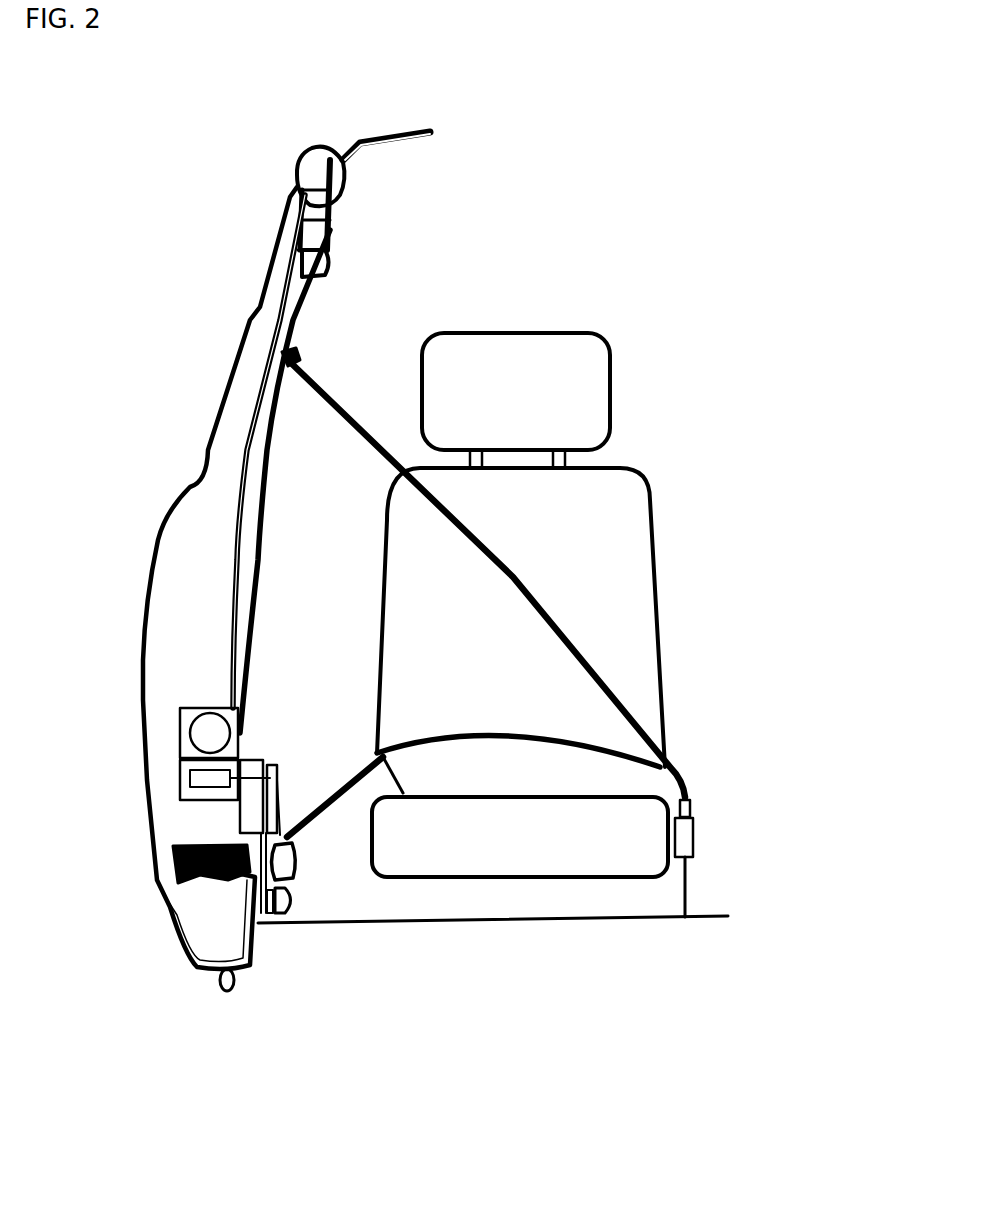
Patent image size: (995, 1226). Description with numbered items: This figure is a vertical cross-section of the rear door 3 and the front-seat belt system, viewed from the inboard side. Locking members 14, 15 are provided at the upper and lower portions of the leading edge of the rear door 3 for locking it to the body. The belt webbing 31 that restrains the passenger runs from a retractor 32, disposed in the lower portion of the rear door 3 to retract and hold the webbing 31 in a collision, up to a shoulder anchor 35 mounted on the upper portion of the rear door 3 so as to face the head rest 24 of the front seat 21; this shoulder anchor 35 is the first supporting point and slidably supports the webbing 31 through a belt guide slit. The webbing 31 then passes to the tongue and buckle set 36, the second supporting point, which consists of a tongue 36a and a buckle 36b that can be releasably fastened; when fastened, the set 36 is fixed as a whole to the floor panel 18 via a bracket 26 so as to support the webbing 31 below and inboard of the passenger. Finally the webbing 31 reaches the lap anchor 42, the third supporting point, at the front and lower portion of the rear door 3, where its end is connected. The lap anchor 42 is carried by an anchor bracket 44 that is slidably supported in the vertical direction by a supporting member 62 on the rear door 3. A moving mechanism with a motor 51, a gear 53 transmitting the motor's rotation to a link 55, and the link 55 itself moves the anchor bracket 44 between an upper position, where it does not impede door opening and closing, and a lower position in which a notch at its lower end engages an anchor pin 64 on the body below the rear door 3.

The rear door 3 is at (190, 487).
The locking member 14 is at (328, 263).
The locking member 15 is at (177, 857).
The floor panel 18 is at (497, 922).
The front seat 21 is at (657, 533).
The head rest 24 is at (583, 385).
The bracket 26 is at (690, 892).
The belt webbing 31 is at (263, 573).
The retractor 32 is at (180, 740).
The shoulder anchor 35 is at (293, 377).
The tongue and buckle set 36 is at (766, 834).
The tongue 36a is at (693, 810).
The buckle 36b is at (693, 843).
The lap anchor 42 is at (262, 913).
The anchor bracket 44 is at (283, 845).
The motor 51 is at (180, 790).
The gear 53 is at (270, 767).
The link 55 is at (280, 835).
The supporting member 62 is at (247, 760).
The anchor pin 64 is at (295, 900).